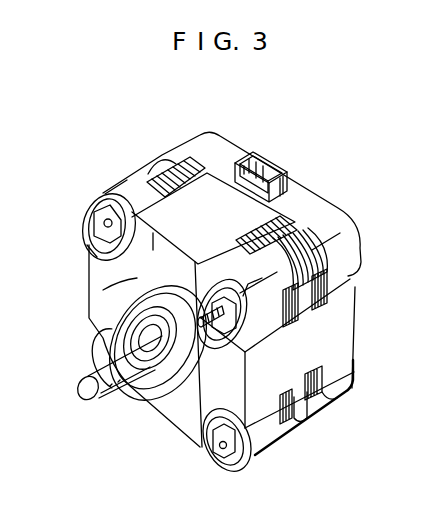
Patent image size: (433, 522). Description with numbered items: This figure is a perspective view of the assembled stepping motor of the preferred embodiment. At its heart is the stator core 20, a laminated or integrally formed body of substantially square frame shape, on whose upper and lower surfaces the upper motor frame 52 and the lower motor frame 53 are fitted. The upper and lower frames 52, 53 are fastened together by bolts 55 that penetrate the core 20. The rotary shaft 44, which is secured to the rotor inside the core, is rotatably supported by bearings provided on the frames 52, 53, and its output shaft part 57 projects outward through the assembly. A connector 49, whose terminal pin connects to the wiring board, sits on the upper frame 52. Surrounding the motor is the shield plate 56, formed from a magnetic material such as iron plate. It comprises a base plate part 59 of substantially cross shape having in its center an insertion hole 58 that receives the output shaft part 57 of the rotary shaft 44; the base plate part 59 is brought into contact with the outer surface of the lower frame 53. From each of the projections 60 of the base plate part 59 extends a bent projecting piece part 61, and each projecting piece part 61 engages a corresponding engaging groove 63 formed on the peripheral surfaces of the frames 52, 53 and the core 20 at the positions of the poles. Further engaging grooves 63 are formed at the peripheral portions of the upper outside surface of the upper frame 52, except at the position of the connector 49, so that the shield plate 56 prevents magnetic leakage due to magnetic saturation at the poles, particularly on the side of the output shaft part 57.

The stator core 20 is at (322, 390).
The rotary shaft 44 is at (128, 360).
The connector 49 is at (278, 185).
The upper motor frame 52 is at (305, 202).
The lower motor frame 53 is at (260, 438).
The bolt 55 is at (234, 355).
The shield plate 56 is at (172, 410).
The output shaft part 57 is at (80, 388).
The insertion hole 58 is at (186, 400).
The base plate part 59 is at (98, 289).
The projection 60 is at (132, 195).
The projecting piece part 61 is at (215, 190).
The engaging groove 63 is at (200, 182).